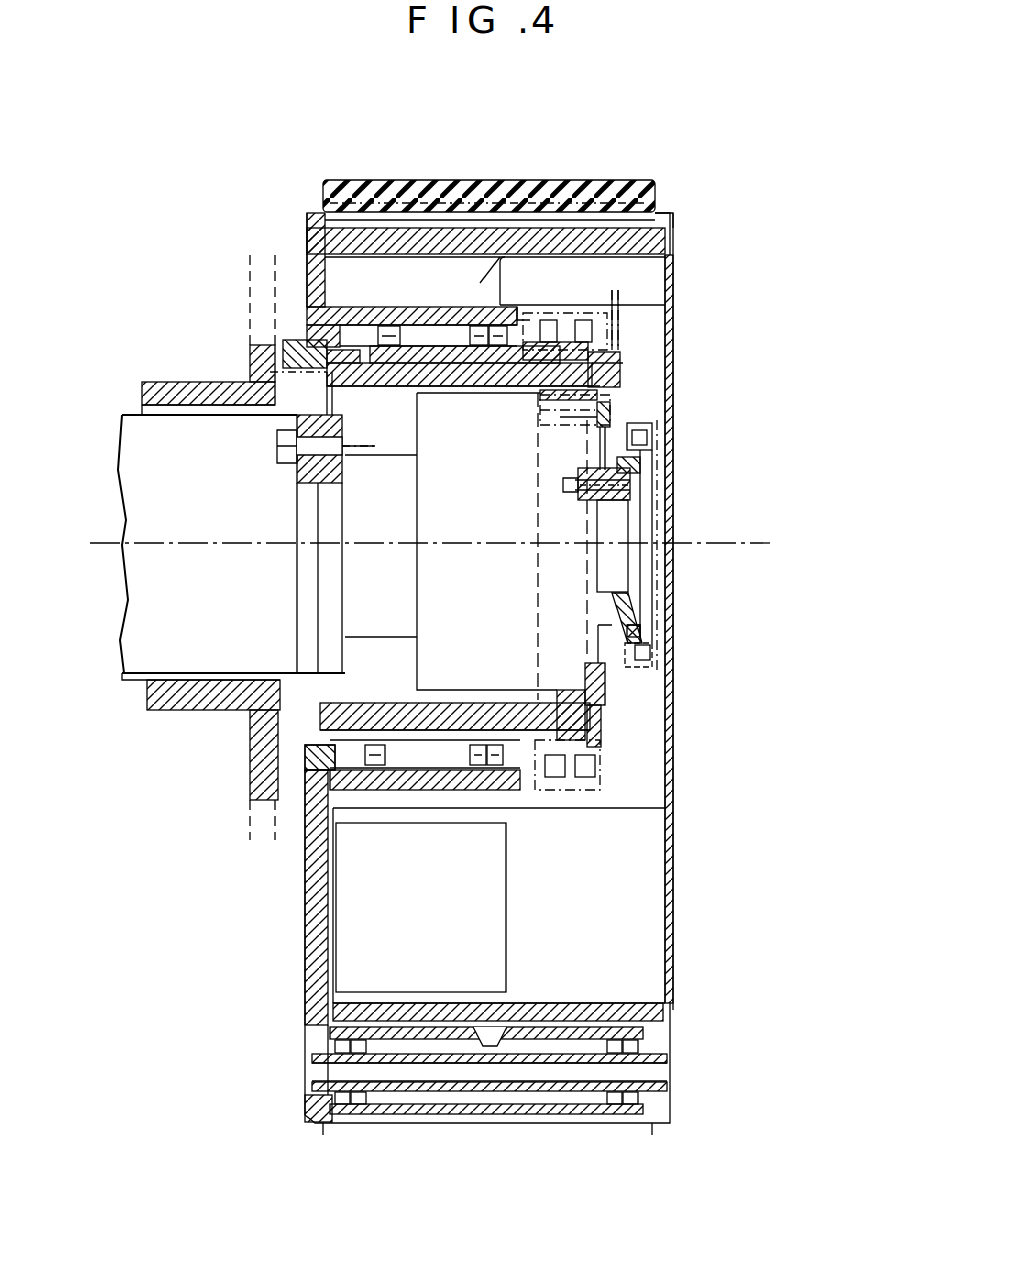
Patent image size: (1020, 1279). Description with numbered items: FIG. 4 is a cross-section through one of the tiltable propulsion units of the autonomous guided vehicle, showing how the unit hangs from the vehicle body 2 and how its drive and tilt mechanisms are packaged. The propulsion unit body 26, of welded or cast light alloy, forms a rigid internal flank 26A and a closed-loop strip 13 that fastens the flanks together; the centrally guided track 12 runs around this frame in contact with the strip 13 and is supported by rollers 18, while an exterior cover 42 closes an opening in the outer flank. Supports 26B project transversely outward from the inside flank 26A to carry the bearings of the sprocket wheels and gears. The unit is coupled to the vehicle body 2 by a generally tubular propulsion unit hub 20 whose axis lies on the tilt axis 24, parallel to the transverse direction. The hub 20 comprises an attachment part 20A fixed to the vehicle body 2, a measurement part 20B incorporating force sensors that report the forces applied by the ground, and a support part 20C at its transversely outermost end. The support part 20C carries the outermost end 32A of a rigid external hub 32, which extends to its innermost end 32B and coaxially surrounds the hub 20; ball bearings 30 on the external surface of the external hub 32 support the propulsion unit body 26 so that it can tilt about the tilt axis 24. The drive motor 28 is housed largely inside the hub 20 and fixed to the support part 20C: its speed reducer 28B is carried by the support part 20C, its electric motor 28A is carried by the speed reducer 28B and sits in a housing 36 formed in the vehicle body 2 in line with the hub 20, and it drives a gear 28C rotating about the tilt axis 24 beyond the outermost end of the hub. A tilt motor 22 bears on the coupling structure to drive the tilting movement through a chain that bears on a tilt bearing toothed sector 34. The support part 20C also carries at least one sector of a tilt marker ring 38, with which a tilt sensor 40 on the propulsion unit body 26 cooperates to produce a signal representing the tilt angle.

The vehicle body 2 is at (250, 340).
The track 12 is at (380, 200).
The closed-loop strip 13 is at (600, 212).
The rollers 18 is at (425, 1112).
The propulsion unit hub 20 is at (390, 400).
The attachment part 20A is at (342, 392).
The measurement part 20B is at (428, 393).
The support part 20C is at (600, 714).
The tilt motor 22 is at (470, 947).
The tilt axis 24 is at (700, 540).
The propulsion unit body 26 is at (283, 857).
The internal flank 26A is at (320, 920).
The supports 26B is at (490, 782).
The drive motor 28 is at (390, 647).
The electric motor 28A is at (165, 505).
The speed reducer 28B is at (560, 627).
The gear 28C is at (637, 432).
The ball bearings 30 is at (470, 340).
The external hub 32 is at (495, 385).
The transversely outermost end 32A is at (595, 405).
The transversely innermost end 32B is at (395, 340).
The tilt bearing toothed sector 34 is at (585, 742).
The housing 36 is at (165, 685).
The tilt marker ring 38 is at (610, 377).
The tilt sensor 40 is at (617, 320).
The exterior cover 42 is at (668, 472).